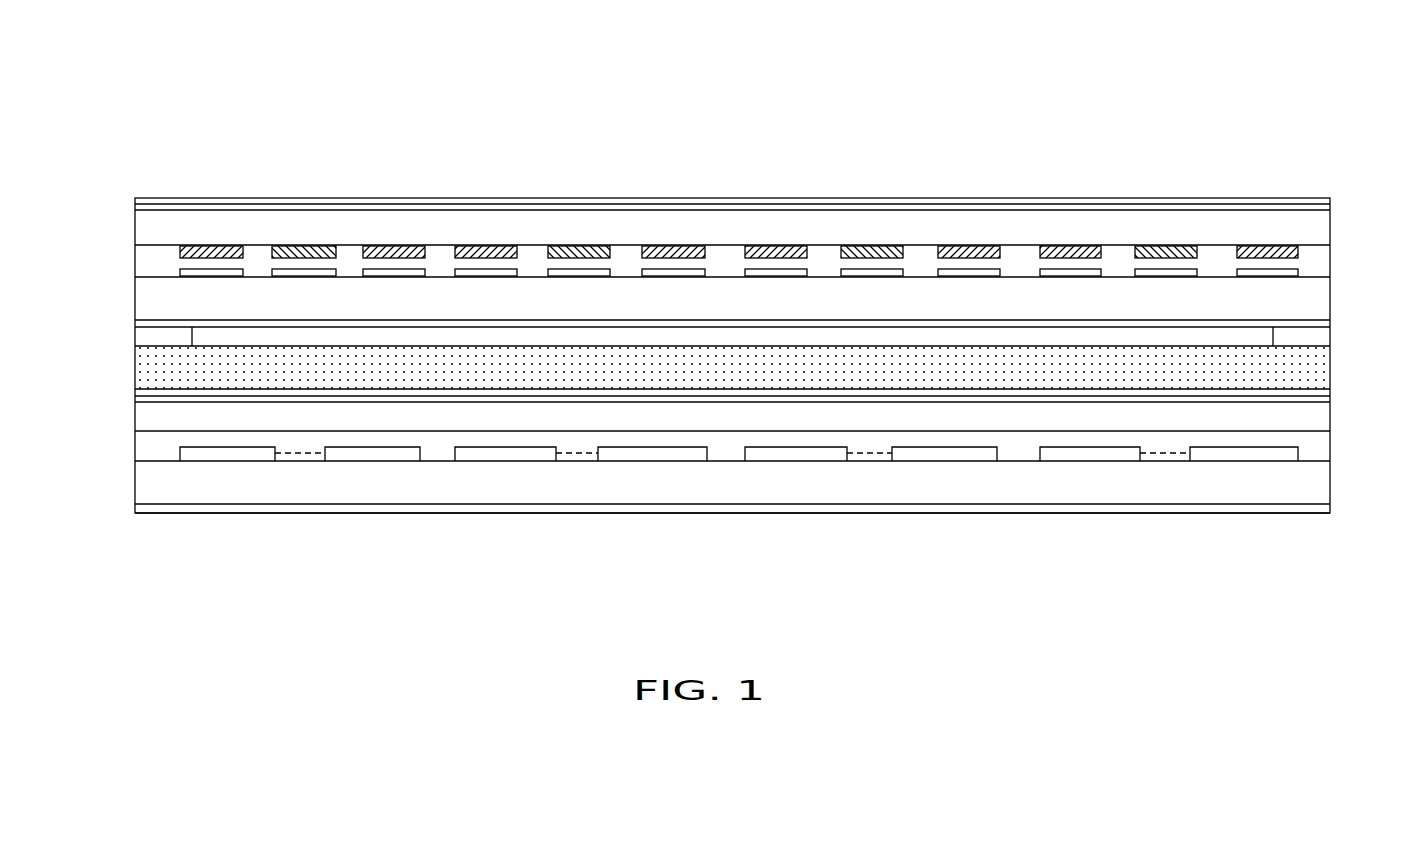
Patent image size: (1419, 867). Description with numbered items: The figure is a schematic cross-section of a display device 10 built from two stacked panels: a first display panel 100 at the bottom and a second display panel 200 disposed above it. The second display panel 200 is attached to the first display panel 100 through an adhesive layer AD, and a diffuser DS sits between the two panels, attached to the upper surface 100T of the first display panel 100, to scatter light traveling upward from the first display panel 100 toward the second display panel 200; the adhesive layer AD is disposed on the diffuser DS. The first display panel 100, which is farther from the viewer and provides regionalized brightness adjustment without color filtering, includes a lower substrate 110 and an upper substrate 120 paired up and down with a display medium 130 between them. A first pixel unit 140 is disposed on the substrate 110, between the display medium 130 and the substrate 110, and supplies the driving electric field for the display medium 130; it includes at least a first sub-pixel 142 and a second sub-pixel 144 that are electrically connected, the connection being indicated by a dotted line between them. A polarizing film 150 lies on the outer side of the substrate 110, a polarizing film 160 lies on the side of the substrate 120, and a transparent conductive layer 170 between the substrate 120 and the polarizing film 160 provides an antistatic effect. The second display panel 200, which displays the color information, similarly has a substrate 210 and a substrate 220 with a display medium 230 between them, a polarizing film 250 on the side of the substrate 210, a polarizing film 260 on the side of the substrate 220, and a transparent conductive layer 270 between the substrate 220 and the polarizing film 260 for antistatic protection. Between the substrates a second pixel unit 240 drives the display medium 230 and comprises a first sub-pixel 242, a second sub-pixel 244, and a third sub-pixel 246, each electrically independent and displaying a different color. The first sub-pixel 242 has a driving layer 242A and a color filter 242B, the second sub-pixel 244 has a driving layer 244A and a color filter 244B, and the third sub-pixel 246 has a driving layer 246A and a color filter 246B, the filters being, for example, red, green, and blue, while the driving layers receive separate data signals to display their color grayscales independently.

The display device 10 is at (1199, 576).
The first display panel 100 is at (1343, 390).
The upper surface of the first display panel 100T is at (180, 390).
The substrate 110 is at (143, 487).
The substrate 120 is at (143, 417).
The display medium 130 is at (722, 440).
The first pixel unit 140 is at (652, 557).
The first sub-pixel 142 is at (528, 461).
The second sub-pixel 144 is at (628, 461).
The polarizing film 150 is at (143, 508).
The polarizing film 160 is at (143, 393).
The transparent conductive layer 170 is at (143, 401).
The second display panel 200 is at (1343, 198).
The substrate 210 is at (143, 297).
The substrate 220 is at (142, 230).
The display medium 230 is at (143, 260).
The second pixel unit 240 is at (140, 93).
The first sub-pixel 242 is at (93, 137).
The driving layer 242A is at (187, 272).
The color filter 242B is at (215, 252).
The second sub-pixel 244 is at (247, 137).
The driving layer 244A is at (340, 270).
The color filter 244B is at (305, 252).
The third sub-pixel 246 is at (542, 137).
The driving layer 246A is at (423, 273).
The color filter 246B is at (412, 255).
The polarizing film 250 is at (143, 325).
The polarizing film 260 is at (135, 201).
The transparent conductive layer 270 is at (135, 209).
The adhesive layer AD is at (1322, 338).
The diffuser DS is at (1323, 372).